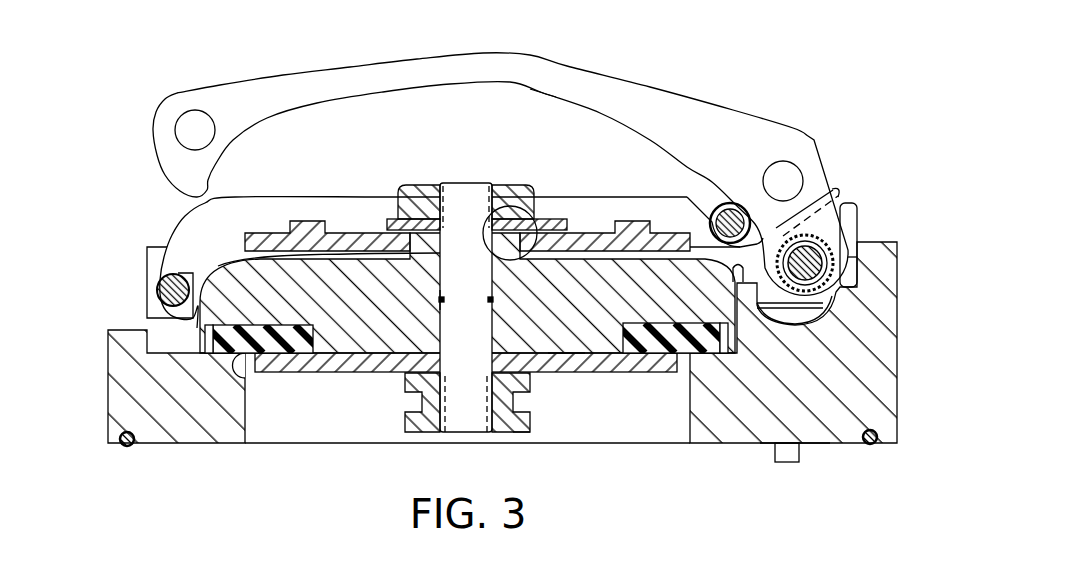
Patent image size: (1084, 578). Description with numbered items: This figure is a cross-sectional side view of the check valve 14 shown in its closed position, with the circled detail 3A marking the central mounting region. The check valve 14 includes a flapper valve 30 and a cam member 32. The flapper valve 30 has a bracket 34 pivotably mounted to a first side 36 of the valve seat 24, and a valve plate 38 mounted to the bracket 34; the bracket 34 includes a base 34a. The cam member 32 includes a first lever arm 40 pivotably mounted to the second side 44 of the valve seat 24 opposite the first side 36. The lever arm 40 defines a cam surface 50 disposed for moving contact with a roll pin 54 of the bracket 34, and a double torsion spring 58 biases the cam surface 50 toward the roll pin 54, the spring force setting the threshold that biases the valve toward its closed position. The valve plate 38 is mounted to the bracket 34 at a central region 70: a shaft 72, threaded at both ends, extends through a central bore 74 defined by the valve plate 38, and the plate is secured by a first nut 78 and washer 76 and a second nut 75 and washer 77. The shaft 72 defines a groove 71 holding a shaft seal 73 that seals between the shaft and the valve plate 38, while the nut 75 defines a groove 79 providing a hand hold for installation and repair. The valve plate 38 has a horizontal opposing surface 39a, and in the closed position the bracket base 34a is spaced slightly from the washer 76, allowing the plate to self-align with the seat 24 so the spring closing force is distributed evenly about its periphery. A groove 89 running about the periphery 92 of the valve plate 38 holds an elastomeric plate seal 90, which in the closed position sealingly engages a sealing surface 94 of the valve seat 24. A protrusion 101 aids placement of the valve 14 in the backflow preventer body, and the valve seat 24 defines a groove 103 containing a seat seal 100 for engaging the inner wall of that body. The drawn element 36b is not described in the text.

The check valve 14 is at (544, 162).
The valve seat 24 is at (531, 370).
The flapper valve 30 is at (427, 231).
The cam member 32 is at (500, 147).
The bracket 34 is at (449, 249).
The base 34a is at (580, 237).
The first side 36 is at (147, 258).
The clamp plate 36b is at (645, 221).
The valve plate 38 is at (466, 380).
The opposing surface 39a is at (563, 367).
The first lever arm 40 is at (500, 174).
The second side 44 is at (858, 258).
The cam surface 50 is at (543, 95).
The roll pin 54 is at (711, 208).
The double torsion spring 58 is at (822, 192).
The central region 70 is at (471, 270).
The groove 71 is at (488, 300).
The shaft 72 is at (466, 292).
The shaft seal 73 is at (442, 302).
The central bore 74 is at (496, 318).
The second nut 75 is at (406, 394).
The washer 76 is at (478, 199).
The washer 77 is at (537, 410).
The first nut 78 is at (403, 186).
The groove 79 is at (527, 420).
The groove 89 is at (648, 325).
The plate seal 90 is at (281, 321).
The periphery 92 is at (265, 326).
The sealing surface 94 is at (245, 374).
The seat seal 100 is at (882, 440).
The protrusion 101 is at (790, 458).
The groove 103 is at (863, 433).
The detail view circle 3A is at (485, 240).